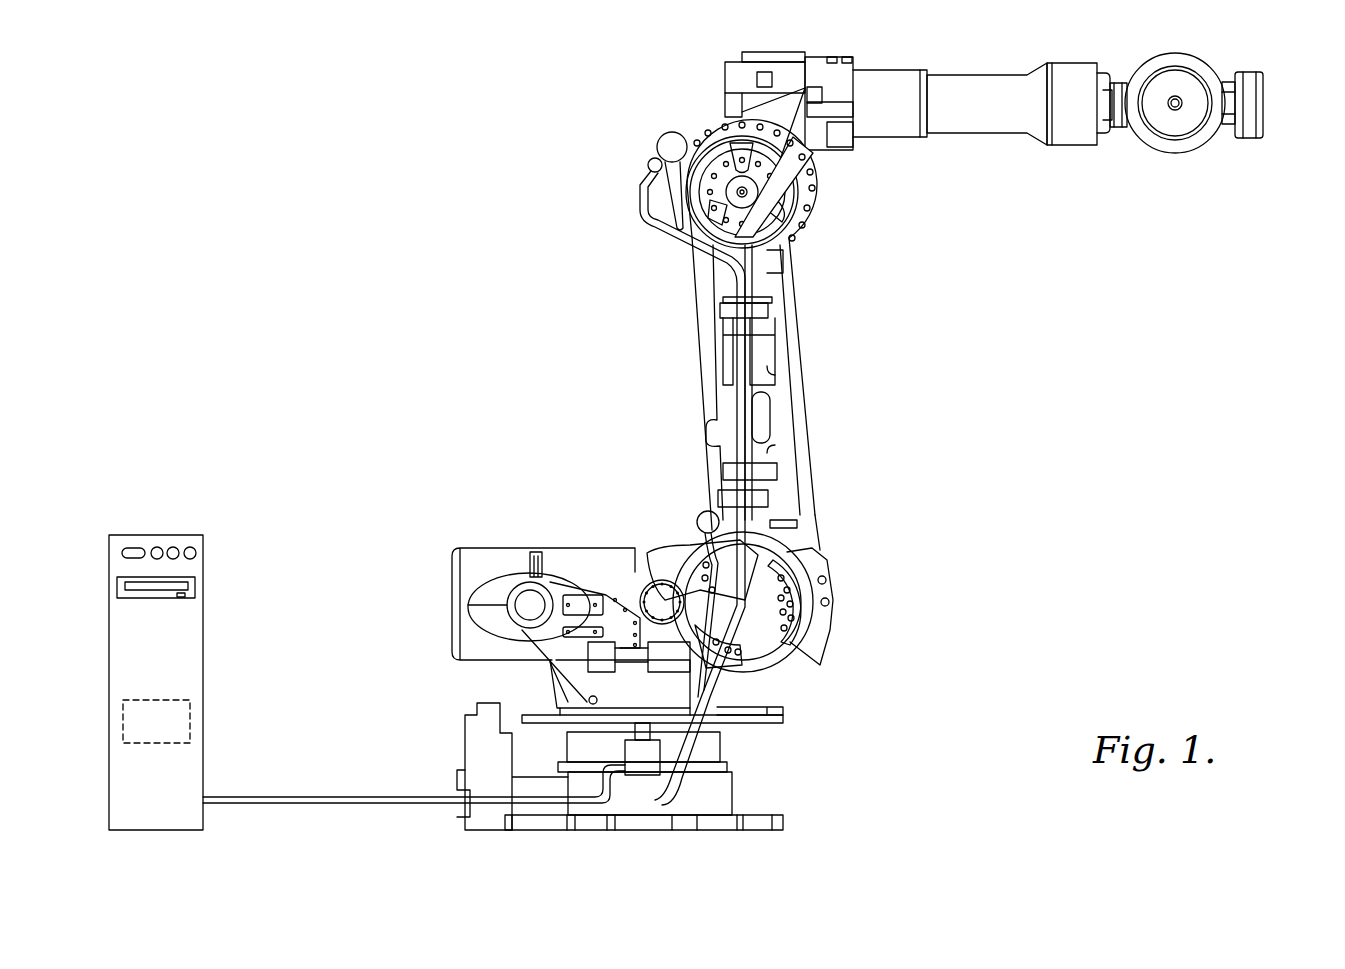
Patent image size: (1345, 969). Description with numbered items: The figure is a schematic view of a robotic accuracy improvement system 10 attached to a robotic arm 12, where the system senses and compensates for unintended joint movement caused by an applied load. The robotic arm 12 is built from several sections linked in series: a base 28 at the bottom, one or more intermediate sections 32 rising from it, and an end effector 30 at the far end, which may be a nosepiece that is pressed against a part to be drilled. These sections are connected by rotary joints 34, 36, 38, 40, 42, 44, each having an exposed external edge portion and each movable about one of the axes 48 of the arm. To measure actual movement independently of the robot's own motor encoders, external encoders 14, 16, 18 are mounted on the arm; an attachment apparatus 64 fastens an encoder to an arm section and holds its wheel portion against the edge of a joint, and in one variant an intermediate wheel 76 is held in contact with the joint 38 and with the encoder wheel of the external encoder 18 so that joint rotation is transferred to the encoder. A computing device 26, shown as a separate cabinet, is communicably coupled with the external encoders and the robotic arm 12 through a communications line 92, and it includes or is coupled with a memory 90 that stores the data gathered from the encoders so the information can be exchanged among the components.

The robotic accuracy improvement system 10 is at (365, 280).
The robotic arm 12 is at (895, 132).
The external encoder 14 is at (648, 770).
The external encoder 16 is at (700, 515).
The external encoder 18 is at (648, 162).
The computing device 26 is at (177, 535).
The base 28 is at (775, 838).
The end effector 30 is at (1265, 115).
The intermediate section 32 is at (805, 412).
The joint 34 is at (720, 748).
The joint 36 is at (812, 560).
The joint 38 is at (725, 118).
The joint 40 is at (1068, 62).
The joint 42 is at (1178, 55).
The joint 44 is at (1245, 70).
The axis 48 is at (800, 235).
The attachment apparatus 64 is at (645, 180).
The intermediate wheel 76 is at (667, 135).
The memory 90 is at (177, 700).
The communications line 92 is at (307, 795).